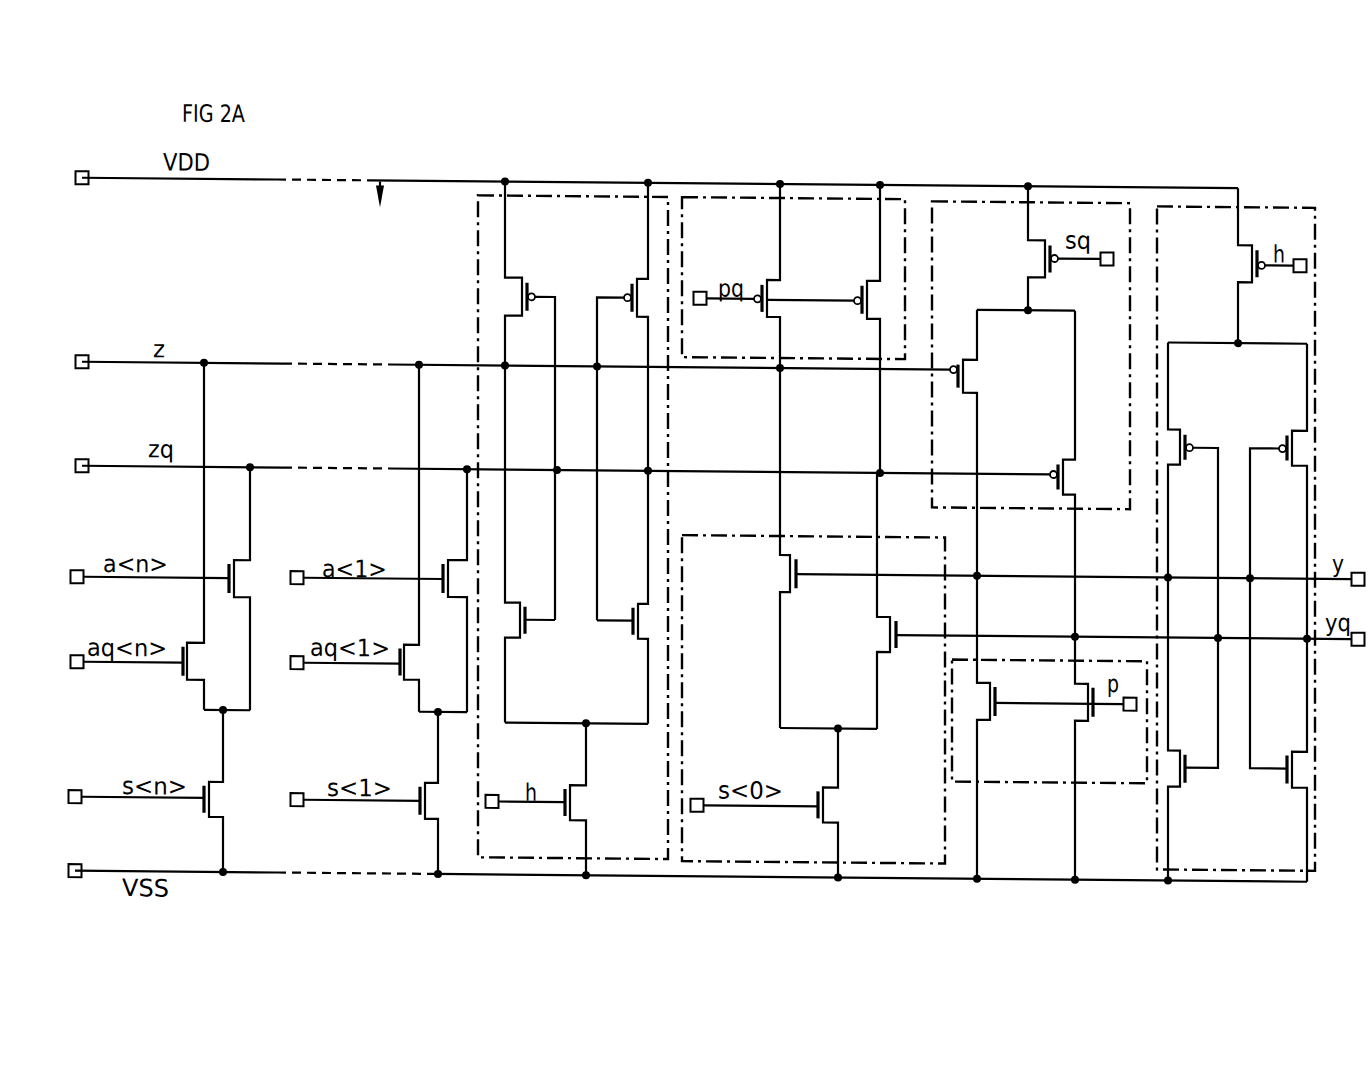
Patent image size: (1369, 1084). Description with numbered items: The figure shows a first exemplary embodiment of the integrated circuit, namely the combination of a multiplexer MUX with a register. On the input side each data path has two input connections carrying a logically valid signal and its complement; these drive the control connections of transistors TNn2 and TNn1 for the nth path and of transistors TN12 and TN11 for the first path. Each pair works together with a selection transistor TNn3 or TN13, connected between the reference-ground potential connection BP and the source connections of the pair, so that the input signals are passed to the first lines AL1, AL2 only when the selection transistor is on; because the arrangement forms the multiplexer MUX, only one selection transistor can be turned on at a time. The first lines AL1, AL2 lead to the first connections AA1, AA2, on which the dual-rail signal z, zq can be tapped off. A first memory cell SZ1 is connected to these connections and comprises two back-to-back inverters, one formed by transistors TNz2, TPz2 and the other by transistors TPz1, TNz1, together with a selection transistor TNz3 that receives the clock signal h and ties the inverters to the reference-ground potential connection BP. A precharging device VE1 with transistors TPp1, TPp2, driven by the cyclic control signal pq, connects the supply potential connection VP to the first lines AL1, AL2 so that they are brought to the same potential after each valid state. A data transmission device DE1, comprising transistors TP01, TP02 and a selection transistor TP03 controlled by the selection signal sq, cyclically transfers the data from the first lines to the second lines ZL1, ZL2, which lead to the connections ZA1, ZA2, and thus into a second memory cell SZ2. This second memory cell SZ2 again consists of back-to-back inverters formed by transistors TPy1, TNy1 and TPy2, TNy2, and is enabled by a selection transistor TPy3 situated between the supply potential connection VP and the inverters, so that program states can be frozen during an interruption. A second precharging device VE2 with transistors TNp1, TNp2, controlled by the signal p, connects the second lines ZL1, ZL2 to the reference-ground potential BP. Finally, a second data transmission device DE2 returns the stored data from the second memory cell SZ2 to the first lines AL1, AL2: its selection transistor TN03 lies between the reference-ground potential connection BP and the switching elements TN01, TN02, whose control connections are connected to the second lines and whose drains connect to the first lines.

The supply potential connection VP is at (84, 169).
The multiplexer MUX is at (380, 182).
The first connection AA1 is at (84, 352).
The first connection AA2 is at (84, 457).
The first line AL1 is at (380, 355).
The first line AL2 is at (380, 459).
The reference-ground potential connection BP is at (78, 862).
The transistor TNn1 is at (183, 642).
The transistor TNn2 is at (226, 556).
The selection transistor TNn3 is at (204, 808).
The transistor TN11 is at (397, 675).
The transistor TN12 is at (440, 595).
The selection transistor TN13 is at (420, 809).
The memory cell SZ1 is at (600, 188).
The transistor TPz1 is at (624, 285).
The transistor TPz2 is at (532, 288).
The transistor TNz1 is at (630, 620).
The transistor TNz2 is at (522, 623).
The selection transistor TNz3 is at (563, 810).
The precharging device VE1 is at (750, 188).
The transistor TPp1 is at (858, 282).
The transistor TPp2 is at (762, 281).
The second data transmission device DE2 is at (760, 528).
The switching element TN01 is at (893, 622).
The switching element TN02 is at (790, 558).
The selection transistor TN03 is at (818, 805).
The data transmission device DE1 is at (960, 191).
The transistor TP01 is at (1060, 460).
The transistor TP02 is at (962, 369).
The selection transistor TP03 is at (1047, 251).
The second line ZL1 is at (990, 571).
The second line ZL2 is at (1112, 624).
The precharging device VE2 is at (1015, 774).
The transistor TNp1 is at (1100, 712).
The transistor TNp2 is at (998, 713).
The second memory cell SZ2 is at (1278, 194).
The transistor TPy1 is at (1190, 424).
The transistor TPy2 is at (1290, 424).
The selection transistor TPy3 is at (1255, 257).
The transistor TNy1 is at (1187, 764).
The transistor TNy2 is at (1285, 784).
The first output ZA1 is at (1355, 548).
The second output ZA2 is at (1358, 634).